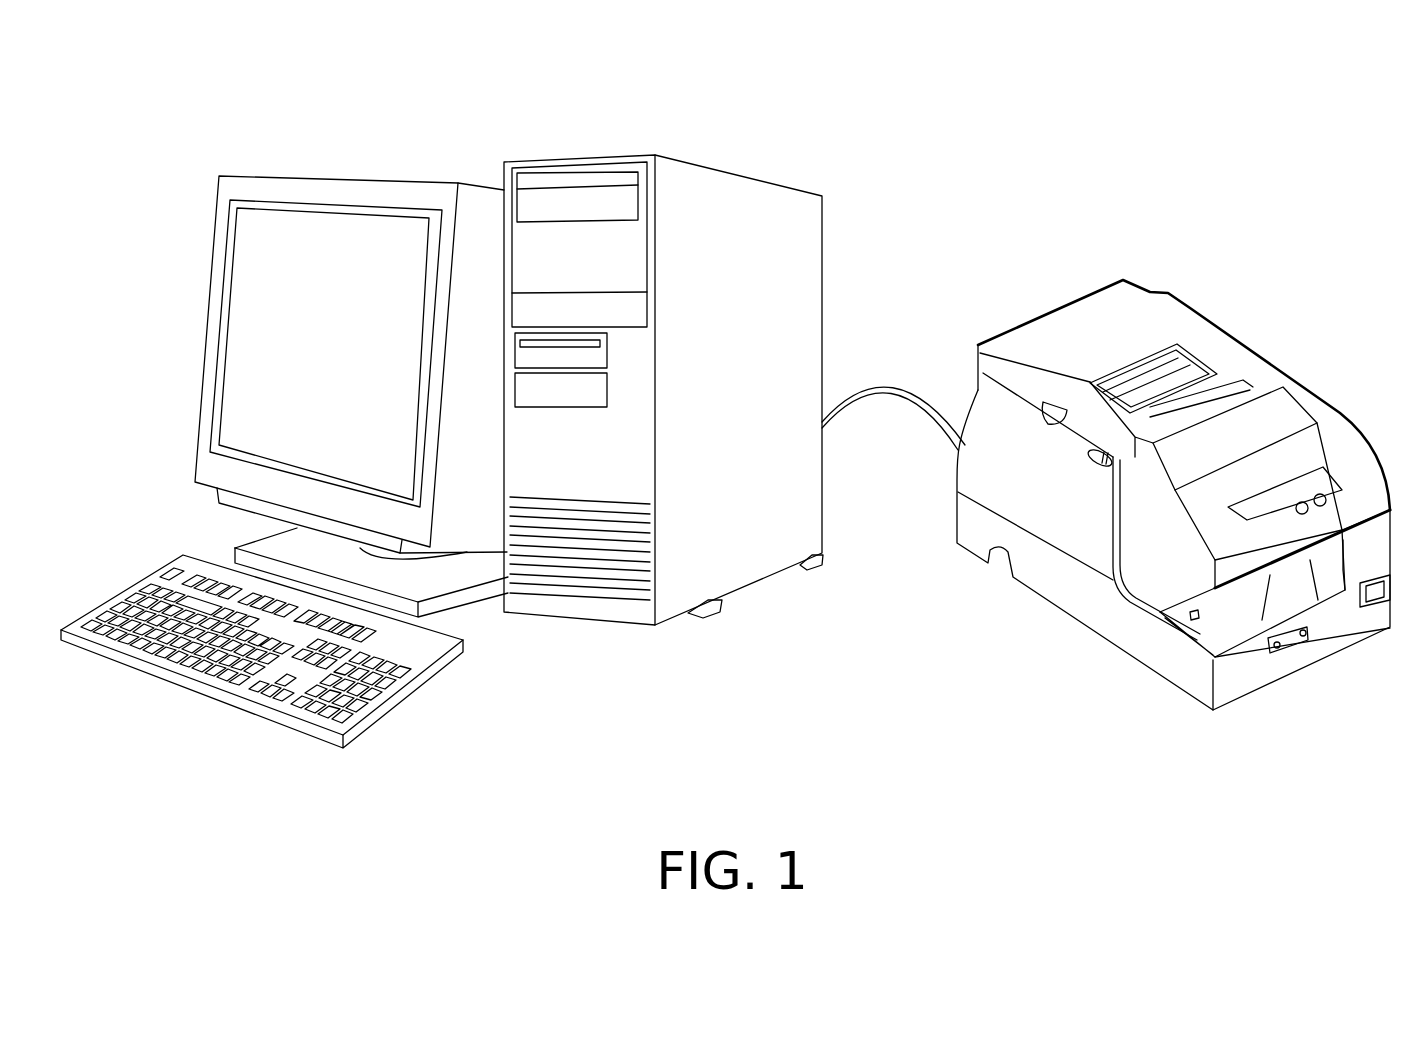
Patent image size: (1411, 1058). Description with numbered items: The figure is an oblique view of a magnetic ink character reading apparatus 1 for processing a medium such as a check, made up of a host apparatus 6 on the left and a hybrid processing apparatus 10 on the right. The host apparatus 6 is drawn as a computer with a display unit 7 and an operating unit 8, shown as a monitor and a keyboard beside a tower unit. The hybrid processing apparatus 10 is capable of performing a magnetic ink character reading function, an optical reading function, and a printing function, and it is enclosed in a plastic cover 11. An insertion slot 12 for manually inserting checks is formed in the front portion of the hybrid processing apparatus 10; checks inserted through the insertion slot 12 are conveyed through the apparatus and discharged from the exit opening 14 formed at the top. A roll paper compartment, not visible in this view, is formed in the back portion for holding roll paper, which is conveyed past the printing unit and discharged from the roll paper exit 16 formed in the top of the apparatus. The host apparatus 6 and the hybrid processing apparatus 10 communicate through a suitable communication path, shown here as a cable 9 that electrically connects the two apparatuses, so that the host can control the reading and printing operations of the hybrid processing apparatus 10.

The magnetic ink character reading apparatus 1 is at (913, 62).
The host apparatus 6 is at (470, 153).
The display unit 7 is at (262, 255).
The operating unit 8 is at (313, 708).
The cable 9 is at (897, 388).
The hybrid processing apparatus 10 is at (937, 153).
The plastic cover 11 is at (1335, 435).
The insertion slot 12 is at (1267, 587).
The exit opening 14 is at (1230, 387).
The roll paper exit 16 is at (1175, 367).